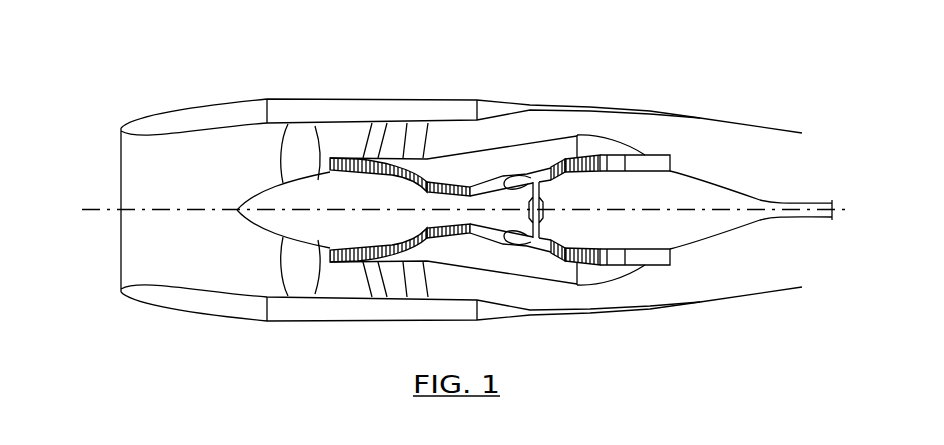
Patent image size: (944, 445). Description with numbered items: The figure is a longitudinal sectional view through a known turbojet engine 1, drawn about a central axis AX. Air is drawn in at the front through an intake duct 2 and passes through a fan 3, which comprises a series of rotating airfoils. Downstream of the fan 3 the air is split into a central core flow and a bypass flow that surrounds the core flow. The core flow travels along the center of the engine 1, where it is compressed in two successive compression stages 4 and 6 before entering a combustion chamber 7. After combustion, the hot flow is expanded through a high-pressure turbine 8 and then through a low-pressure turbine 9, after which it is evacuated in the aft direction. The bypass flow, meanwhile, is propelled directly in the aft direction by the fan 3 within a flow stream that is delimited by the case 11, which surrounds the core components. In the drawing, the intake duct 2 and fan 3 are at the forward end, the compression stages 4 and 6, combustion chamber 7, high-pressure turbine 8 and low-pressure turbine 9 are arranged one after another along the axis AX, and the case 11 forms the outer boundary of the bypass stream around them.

The engine 1 is at (450, 162).
The intake duct 2 is at (219, 165).
The fan 3 is at (297, 264).
The compression stage 4 is at (347, 160).
The compression stage 6 is at (451, 182).
The combustion chamber 7 is at (528, 172).
The high-pressure turbine 8 is at (548, 162).
The low-pressure turbine 9 is at (593, 152).
The case 11 is at (389, 106).
The engine axis AX is at (98, 208).